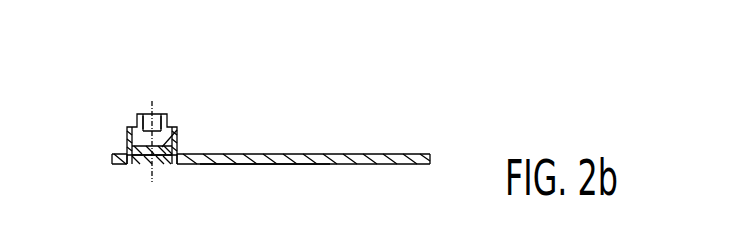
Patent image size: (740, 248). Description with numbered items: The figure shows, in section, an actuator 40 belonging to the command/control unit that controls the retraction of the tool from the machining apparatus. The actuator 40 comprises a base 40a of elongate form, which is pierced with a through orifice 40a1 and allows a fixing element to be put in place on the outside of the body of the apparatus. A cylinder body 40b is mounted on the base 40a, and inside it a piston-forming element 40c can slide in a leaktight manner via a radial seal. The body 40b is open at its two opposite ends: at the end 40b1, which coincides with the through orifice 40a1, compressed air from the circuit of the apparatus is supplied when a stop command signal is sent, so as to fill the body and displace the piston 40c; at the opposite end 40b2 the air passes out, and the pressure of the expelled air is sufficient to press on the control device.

The actuator 40 is at (367, 152).
The base 40a is at (313, 164).
The through orifice 40a1 is at (163, 165).
The cylinder body 40b is at (123, 142).
The end of the body 40b1 is at (137, 165).
The opposite end of the body 40b2 is at (143, 108).
The piston-forming element 40c is at (177, 130).